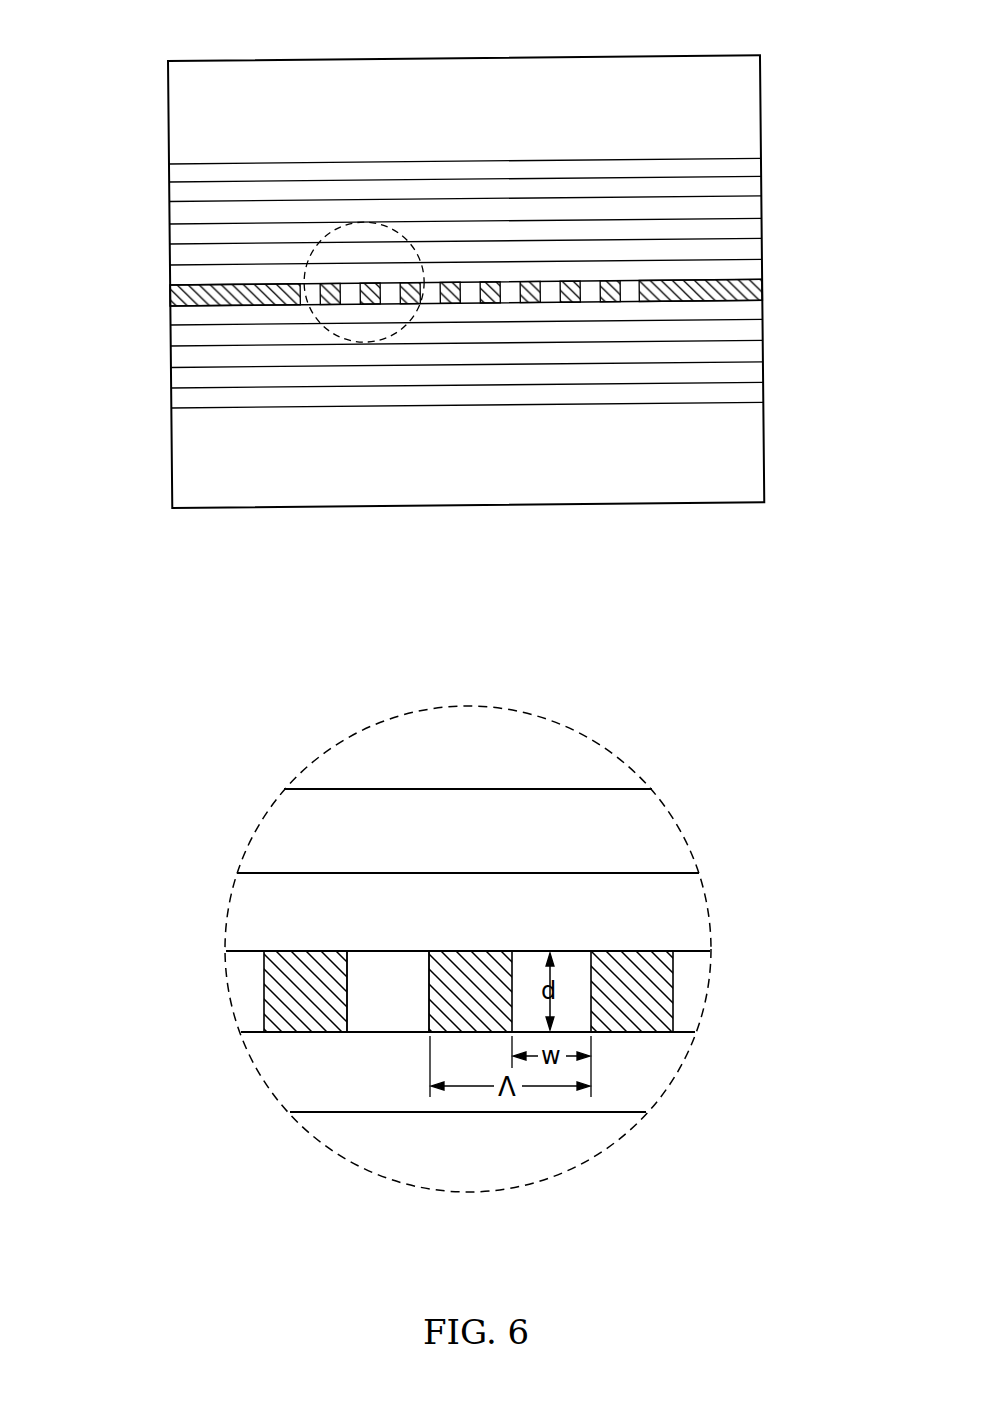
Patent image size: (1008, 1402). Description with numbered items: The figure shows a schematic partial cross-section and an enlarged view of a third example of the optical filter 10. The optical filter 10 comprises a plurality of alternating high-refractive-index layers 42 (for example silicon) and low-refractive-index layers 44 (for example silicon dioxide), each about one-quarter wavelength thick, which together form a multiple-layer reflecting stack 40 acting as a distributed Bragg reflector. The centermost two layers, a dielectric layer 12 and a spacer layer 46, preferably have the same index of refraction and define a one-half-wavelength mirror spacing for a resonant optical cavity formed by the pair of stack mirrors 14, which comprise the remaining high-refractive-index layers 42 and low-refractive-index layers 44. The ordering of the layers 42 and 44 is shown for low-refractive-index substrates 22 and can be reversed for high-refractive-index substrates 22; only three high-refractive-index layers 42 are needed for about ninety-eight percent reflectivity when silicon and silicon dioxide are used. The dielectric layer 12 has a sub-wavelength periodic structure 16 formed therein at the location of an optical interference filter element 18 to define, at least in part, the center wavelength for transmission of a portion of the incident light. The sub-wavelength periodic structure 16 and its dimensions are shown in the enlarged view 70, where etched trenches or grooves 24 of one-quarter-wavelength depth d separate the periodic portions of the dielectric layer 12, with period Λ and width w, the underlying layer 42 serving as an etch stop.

The optical filter 10 is at (751, 527).
The dielectric layer 12 is at (752, 289).
The stack mirrors 14 is at (843, 55).
The sub-wavelength periodic structure 16 is at (711, 948).
The optical interference filter element 18 is at (635, 37).
The substrate 22 is at (657, 112).
The etched trenches or grooves 24 is at (398, 1004).
The multiple-layer reflecting stack 40 is at (771, 157).
The high-refractive-index layer 42 is at (178, 173).
The low-refractive-index layer 44 is at (178, 193).
The spacer layer 46 is at (178, 275).
The enlarged view 70 is at (326, 230).